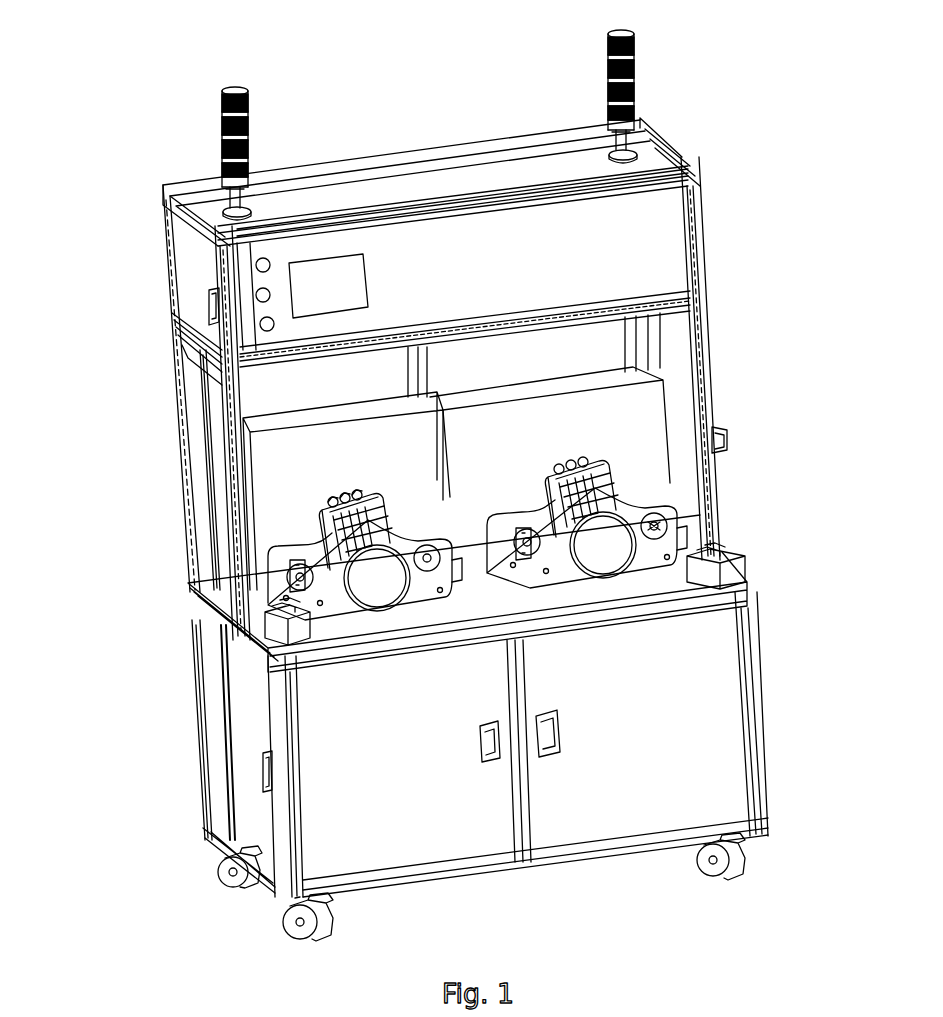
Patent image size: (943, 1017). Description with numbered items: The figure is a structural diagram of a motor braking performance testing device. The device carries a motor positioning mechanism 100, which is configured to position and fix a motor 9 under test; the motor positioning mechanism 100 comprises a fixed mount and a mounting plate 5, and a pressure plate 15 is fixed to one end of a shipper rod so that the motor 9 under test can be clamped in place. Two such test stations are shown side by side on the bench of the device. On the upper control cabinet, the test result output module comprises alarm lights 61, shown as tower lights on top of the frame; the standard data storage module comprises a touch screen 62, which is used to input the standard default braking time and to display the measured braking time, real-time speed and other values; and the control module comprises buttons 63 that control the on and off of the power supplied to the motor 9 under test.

The alarm lights 61 is at (222, 131).
The touch screen 62 is at (313, 287).
The buttons 63 is at (260, 324).
The mounting plate 5 is at (312, 556).
The motor under test 9 is at (363, 580).
The motor positioning mechanism 100 is at (660, 493).
The pressure plate 15 is at (665, 527).